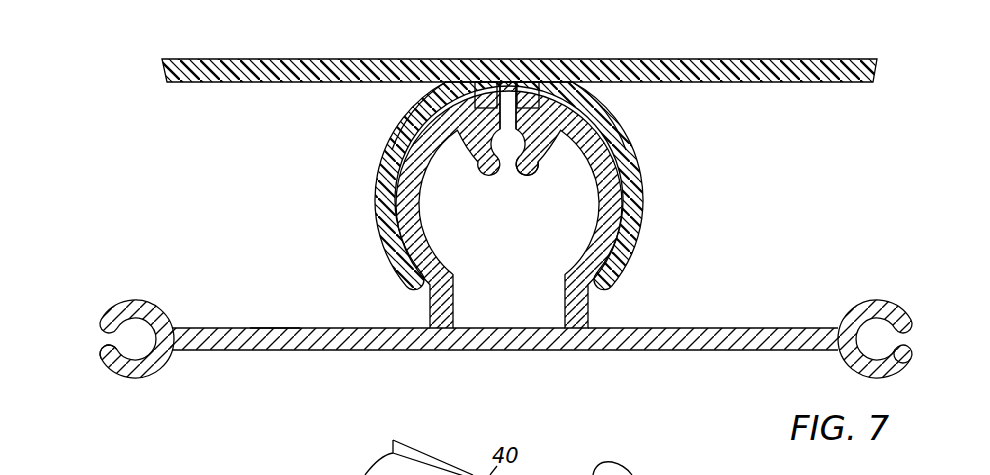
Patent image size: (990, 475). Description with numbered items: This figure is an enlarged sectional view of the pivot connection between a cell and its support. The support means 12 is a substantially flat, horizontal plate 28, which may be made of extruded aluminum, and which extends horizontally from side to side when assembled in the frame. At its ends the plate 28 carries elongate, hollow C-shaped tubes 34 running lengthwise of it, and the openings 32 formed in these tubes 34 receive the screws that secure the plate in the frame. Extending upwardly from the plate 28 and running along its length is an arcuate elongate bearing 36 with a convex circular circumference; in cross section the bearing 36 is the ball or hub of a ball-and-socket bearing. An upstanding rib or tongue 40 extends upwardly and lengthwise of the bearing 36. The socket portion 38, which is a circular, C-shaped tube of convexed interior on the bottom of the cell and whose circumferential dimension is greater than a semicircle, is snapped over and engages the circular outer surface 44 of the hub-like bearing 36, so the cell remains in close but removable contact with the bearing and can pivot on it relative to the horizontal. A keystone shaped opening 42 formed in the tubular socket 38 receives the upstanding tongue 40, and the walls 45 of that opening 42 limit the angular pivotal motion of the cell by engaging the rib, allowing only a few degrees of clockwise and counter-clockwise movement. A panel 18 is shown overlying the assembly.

The support means 12 is at (272, 315).
The panel 18 is at (243, 82).
The plate 28 is at (690, 326).
The openings 32 is at (117, 347).
The C-shaped tubes 34 is at (133, 298).
The bearing 36 is at (420, 290).
The socket portion 38 is at (643, 204).
The tongue 40 is at (460, 103).
The keystone shaped opening 42 is at (552, 103).
The circular outer surface 44 is at (623, 157).
The walls 45 is at (470, 90).